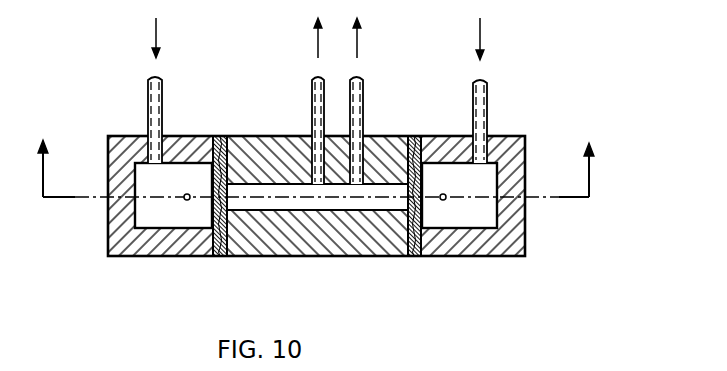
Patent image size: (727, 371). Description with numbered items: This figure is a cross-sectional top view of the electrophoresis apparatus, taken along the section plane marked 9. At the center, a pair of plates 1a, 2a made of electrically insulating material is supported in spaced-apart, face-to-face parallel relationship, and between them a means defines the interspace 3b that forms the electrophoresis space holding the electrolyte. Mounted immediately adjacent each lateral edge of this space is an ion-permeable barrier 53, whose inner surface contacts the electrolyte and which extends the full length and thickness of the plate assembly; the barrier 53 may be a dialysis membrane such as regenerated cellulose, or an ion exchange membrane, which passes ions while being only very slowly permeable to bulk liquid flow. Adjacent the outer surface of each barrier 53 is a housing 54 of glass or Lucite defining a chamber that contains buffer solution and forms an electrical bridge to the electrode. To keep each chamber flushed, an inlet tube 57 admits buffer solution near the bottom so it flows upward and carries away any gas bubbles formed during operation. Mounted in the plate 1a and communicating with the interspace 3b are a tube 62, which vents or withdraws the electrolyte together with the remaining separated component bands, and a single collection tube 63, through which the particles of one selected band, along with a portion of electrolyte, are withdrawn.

The plate 1a is at (247, 136).
The plate 2a is at (343, 257).
The interspace 3b is at (270, 203).
The section plane 9- 9 is at (316, 170).
The ion-permeable barrier 53 is at (220, 257).
The housing 54 is at (108, 220).
The inlet tube 57 is at (162, 95).
The tube 62 is at (312, 97).
The collection tube 63 is at (363, 101).